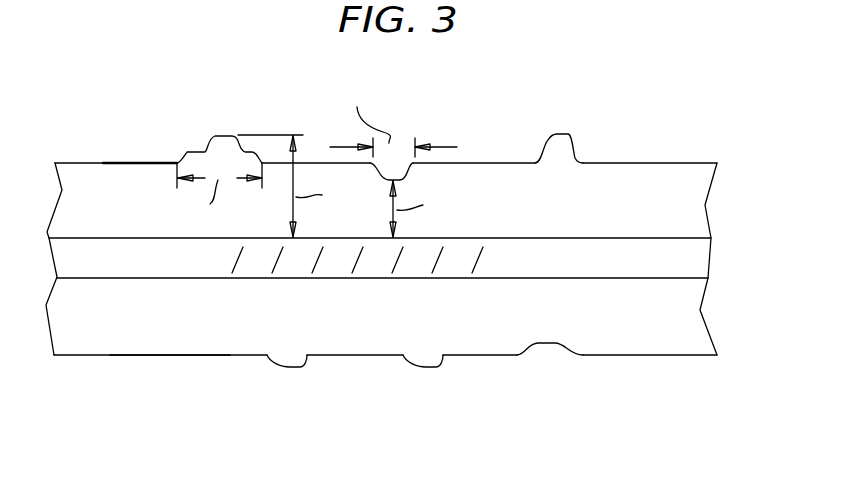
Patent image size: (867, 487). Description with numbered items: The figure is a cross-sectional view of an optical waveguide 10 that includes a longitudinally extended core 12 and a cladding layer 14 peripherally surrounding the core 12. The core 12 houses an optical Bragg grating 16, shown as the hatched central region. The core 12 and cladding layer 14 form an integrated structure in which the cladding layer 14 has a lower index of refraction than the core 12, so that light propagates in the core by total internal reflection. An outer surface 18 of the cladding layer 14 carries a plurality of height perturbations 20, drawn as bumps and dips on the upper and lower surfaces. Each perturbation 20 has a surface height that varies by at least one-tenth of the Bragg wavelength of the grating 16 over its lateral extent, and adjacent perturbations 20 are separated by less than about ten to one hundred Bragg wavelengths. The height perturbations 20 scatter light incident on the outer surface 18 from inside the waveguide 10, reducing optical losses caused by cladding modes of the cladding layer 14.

The optical waveguide 10 is at (633, 105).
The core 12 is at (694, 263).
The cladding layer 14 is at (690, 205).
The optical Bragg grating 16 is at (218, 262).
The outer surface 18 is at (130, 163).
The height perturbations 20 is at (222, 136).